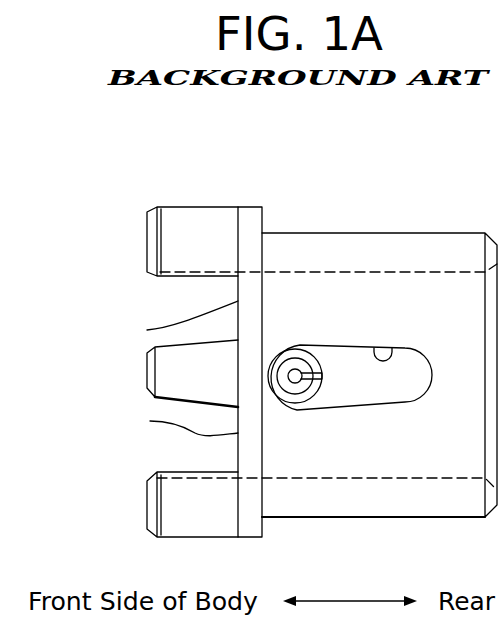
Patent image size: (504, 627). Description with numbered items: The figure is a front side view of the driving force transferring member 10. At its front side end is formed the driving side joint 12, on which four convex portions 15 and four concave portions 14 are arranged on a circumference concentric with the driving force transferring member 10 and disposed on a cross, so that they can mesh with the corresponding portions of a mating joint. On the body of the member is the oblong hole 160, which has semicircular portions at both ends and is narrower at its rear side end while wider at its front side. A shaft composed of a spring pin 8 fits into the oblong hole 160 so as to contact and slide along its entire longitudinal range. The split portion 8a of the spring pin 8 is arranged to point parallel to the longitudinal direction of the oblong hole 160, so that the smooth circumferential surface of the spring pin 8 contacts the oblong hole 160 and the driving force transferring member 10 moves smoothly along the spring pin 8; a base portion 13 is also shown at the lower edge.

The driving force transferring member 10 is at (243, 176).
The driving side joint 12 is at (112, 278).
The base portion 13 is at (345, 519).
The concave portions 14 is at (177, 370).
The convex portions 15 is at (168, 257).
The spring pin 8 is at (318, 357).
The split portion 8a is at (322, 388).
The oblong hole 160 is at (397, 352).